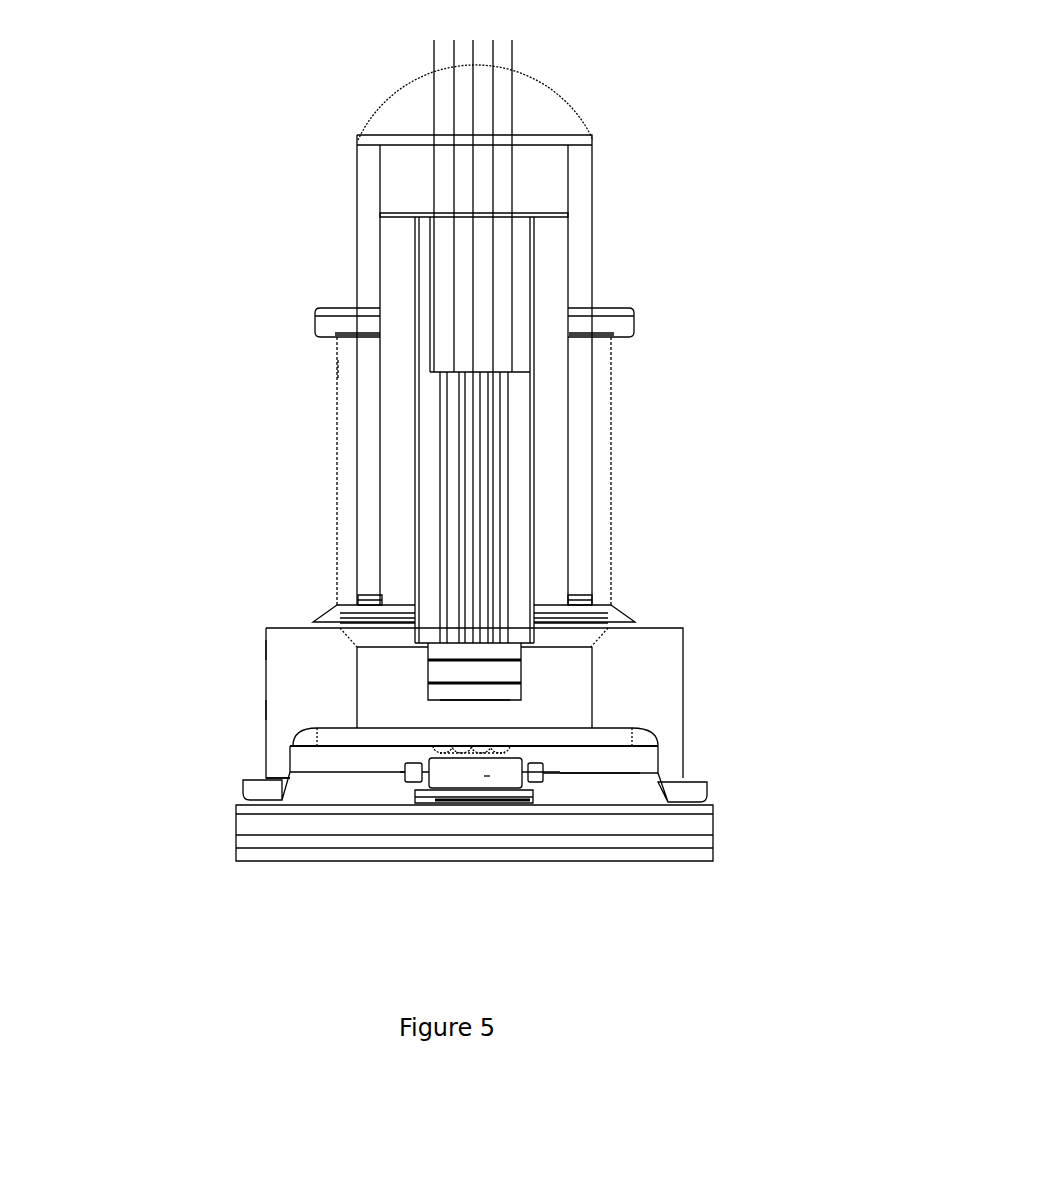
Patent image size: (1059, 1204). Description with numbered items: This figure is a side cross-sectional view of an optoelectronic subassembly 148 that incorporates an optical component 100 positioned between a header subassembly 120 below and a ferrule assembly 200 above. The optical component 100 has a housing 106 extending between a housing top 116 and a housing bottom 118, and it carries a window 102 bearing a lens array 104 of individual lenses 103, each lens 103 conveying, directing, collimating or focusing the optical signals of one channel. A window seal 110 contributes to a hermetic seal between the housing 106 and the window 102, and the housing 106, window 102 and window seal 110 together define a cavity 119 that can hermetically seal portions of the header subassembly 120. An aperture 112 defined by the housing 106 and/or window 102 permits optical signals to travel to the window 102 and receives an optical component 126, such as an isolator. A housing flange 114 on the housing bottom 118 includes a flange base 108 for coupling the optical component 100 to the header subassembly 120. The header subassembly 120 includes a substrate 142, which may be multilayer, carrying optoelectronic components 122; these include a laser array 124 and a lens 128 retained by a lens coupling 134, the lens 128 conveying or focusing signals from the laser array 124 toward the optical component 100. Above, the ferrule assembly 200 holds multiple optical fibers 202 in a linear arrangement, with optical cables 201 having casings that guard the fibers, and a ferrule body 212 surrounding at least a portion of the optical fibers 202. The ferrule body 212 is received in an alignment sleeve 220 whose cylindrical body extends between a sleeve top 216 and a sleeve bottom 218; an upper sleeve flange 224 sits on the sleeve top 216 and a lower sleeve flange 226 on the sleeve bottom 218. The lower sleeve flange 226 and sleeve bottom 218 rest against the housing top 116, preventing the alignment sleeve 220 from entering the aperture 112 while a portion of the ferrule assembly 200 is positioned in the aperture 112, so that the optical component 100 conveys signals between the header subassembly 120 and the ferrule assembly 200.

The optical component 100 is at (140, 668).
The window 102 is at (605, 740).
The lens 103 is at (507, 748).
The lens array 104 is at (466, 741).
The housing 106 is at (650, 650).
The flange base 108 is at (705, 802).
The window seal 110 is at (670, 756).
The aperture 112 is at (457, 668).
The housing flange 114 is at (700, 788).
The housing top 116 is at (240, 635).
The housing bottom 118 is at (233, 782).
The cavity 119 is at (601, 783).
The header subassembly 120 is at (207, 832).
The optoelectronic components 122 is at (470, 806).
The laser array 124 is at (448, 805).
The optical component 126 is at (472, 712).
The lens 128 is at (487, 775).
The lens coupling 134 is at (535, 780).
The substrate 142 is at (295, 845).
The optoelectronic subassembly 148 is at (155, 504).
The ferrule assembly 200 is at (365, 78).
The optical cables 201 is at (524, 115).
The optical fibers 202 is at (432, 512).
The ferrule body 212 is at (370, 215).
The sleeve top 216 is at (632, 357).
The sleeve bottom 218 is at (643, 616).
The alignment sleeve 220 is at (345, 450).
The upper sleeve flange 224 is at (620, 325).
The lower sleeve flange 226 is at (622, 613).